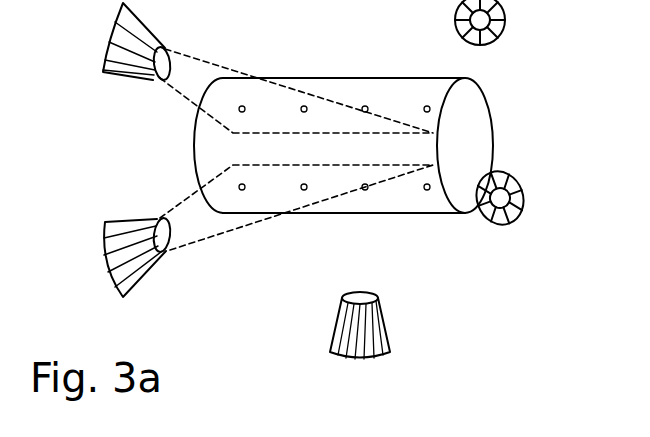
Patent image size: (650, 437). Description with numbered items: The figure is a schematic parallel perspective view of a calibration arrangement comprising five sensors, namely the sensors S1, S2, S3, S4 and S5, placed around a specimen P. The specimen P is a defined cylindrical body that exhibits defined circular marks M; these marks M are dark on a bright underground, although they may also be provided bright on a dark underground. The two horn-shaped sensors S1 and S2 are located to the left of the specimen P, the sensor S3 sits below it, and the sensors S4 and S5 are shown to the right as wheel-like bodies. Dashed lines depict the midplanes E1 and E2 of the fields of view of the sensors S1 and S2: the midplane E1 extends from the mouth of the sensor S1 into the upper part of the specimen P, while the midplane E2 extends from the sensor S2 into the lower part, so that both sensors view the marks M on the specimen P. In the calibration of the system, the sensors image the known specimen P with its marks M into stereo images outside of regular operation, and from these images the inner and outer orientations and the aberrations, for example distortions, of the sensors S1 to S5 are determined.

The sensor S1 is at (111, 42).
The sensor S2 is at (118, 257).
The sensor S3 is at (360, 349).
The sensor S4 is at (518, 205).
The sensor S5 is at (502, 22).
The midplane of the field of view E1 is at (212, 64).
The midplane of the field of view E2 is at (207, 223).
The defined marks M is at (369, 101).
The specimen P is at (477, 124).